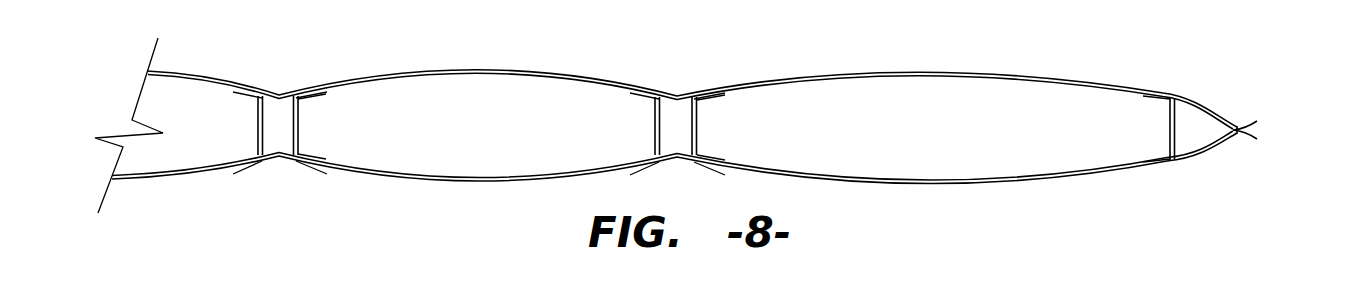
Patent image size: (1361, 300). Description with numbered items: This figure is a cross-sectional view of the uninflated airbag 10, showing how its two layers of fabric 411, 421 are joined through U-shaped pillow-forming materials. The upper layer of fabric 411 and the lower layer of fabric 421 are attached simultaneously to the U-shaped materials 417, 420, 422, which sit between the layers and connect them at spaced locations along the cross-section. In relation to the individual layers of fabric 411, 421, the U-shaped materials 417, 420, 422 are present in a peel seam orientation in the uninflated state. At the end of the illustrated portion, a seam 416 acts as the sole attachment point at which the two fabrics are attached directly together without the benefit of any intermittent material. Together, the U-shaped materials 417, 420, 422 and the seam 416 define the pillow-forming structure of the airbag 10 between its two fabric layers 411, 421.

The airbag 10 is at (724, 124).
The layer of fabric 411 is at (480, 71).
The layer of fabric 421 is at (446, 182).
The U-shaped material 420 is at (245, 96).
The U-shaped material 422 is at (320, 93).
The U-shaped material 417 is at (1148, 96).
The seam 416 is at (1238, 128).